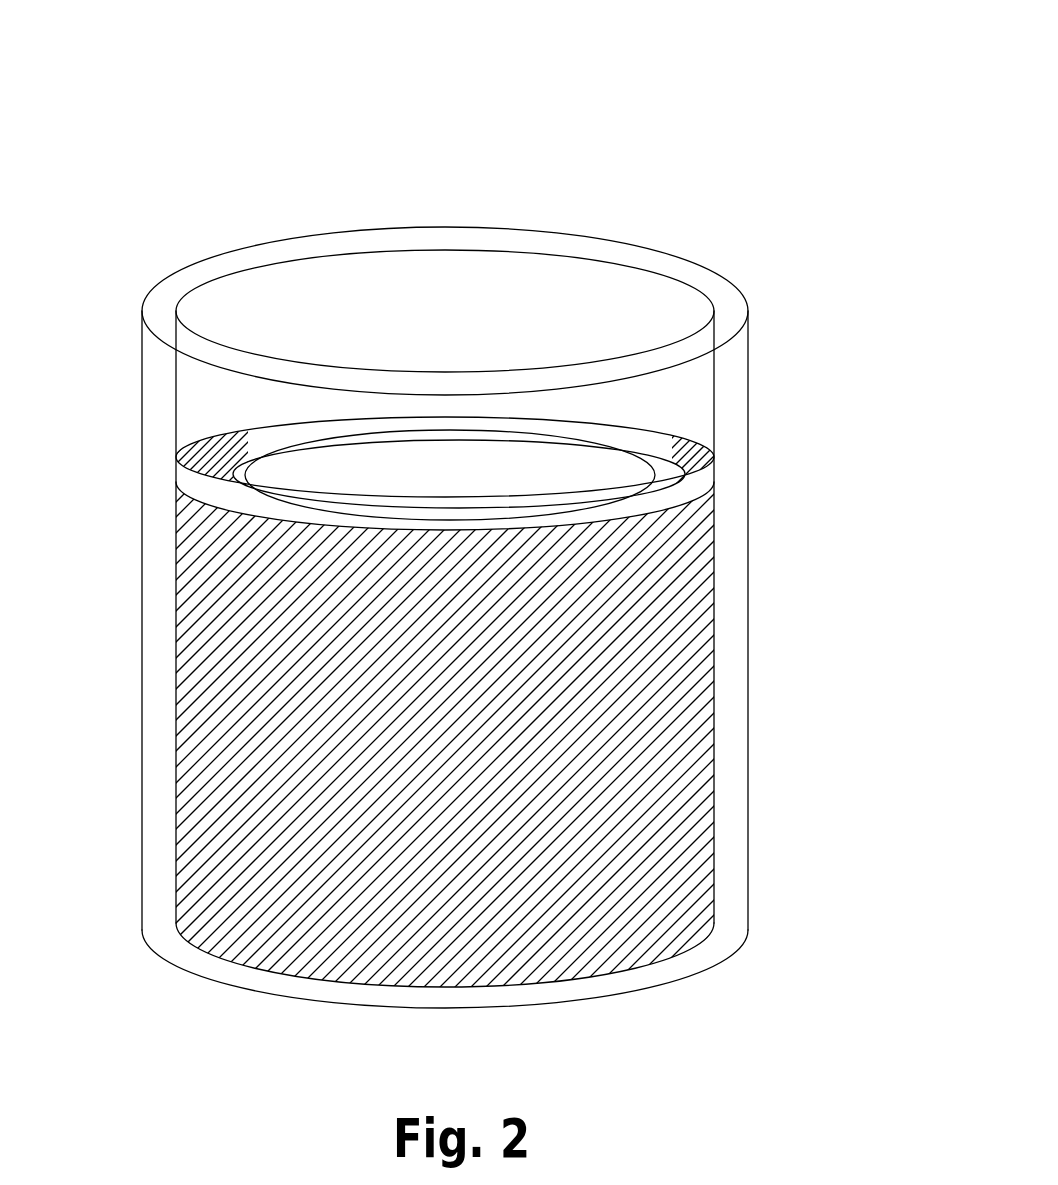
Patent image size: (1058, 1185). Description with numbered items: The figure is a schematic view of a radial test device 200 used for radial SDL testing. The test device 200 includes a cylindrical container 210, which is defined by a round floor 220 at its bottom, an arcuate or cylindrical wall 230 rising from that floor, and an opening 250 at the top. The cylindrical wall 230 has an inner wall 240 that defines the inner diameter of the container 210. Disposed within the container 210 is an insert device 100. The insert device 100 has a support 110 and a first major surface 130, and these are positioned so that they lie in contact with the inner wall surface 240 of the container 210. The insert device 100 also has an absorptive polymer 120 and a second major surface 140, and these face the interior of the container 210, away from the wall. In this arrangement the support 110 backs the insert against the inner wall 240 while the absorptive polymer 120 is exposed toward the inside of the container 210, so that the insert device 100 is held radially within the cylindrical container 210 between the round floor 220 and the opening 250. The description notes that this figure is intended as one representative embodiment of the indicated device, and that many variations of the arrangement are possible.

The test device 200 is at (661, 65).
The cylindrical container 210 is at (750, 687).
The round floor 220 is at (480, 1010).
The cylindrical wall 230 is at (140, 317).
The inner wall 240 is at (233, 272).
The opening 250 is at (648, 290).
The insert device 100 is at (190, 685).
The support 110 is at (208, 492).
The absorptive polymer 120 is at (222, 472).
The first major surface 130 is at (680, 612).
The second major surface 140 is at (617, 470).